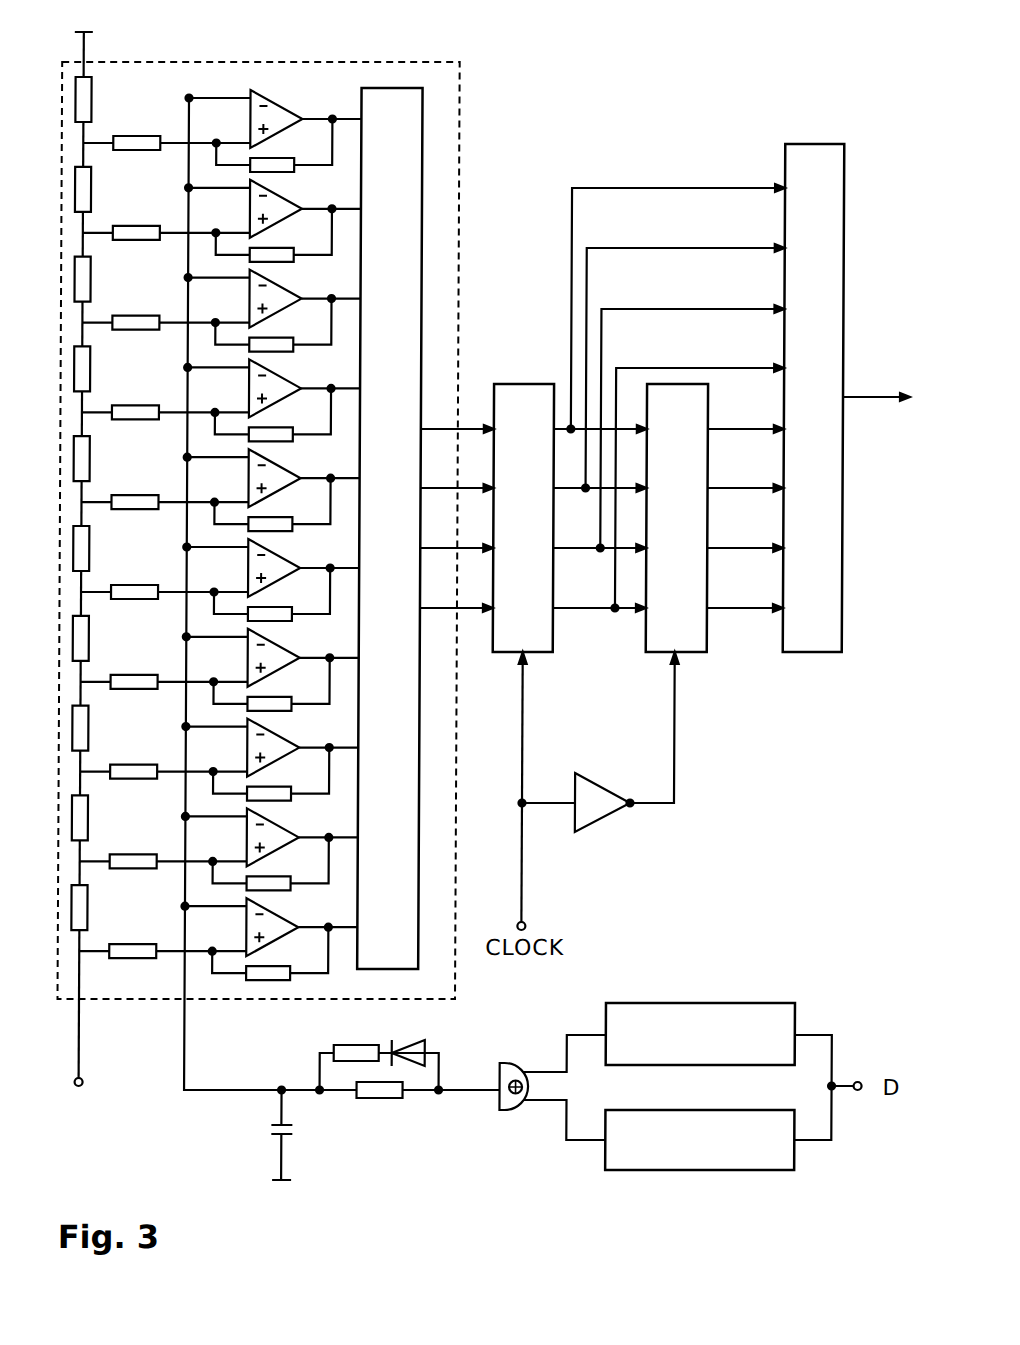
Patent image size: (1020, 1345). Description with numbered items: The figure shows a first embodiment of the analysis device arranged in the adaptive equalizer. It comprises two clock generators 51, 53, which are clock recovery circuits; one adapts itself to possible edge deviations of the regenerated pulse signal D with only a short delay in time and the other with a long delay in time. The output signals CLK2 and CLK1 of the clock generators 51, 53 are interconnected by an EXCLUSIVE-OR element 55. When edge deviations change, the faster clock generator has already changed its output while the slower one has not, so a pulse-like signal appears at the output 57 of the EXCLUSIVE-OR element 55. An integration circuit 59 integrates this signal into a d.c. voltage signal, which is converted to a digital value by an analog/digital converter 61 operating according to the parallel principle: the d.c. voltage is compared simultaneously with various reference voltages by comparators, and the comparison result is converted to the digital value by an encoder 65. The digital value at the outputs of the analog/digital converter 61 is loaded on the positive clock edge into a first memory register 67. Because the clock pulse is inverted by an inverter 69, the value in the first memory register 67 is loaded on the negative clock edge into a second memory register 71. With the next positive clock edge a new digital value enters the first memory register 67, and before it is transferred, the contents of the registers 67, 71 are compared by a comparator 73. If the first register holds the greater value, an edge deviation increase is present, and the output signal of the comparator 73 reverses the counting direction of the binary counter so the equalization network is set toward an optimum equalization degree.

The clock generator 51 is at (703, 1170).
The clock generator 53 is at (699, 1003).
The EXCLUSIVE-OR element 55 is at (507, 1105).
The output of the EXCLUSIVE-OR element 57 is at (468, 1094).
The integration circuit 59 is at (346, 1115).
The analog/digital converter 61 is at (278, 62).
The encoder 65 is at (413, 200).
The first memory register 67 is at (500, 400).
The inverter 69 is at (592, 815).
The second memory register 71 is at (687, 648).
The comparator 73 is at (808, 648).